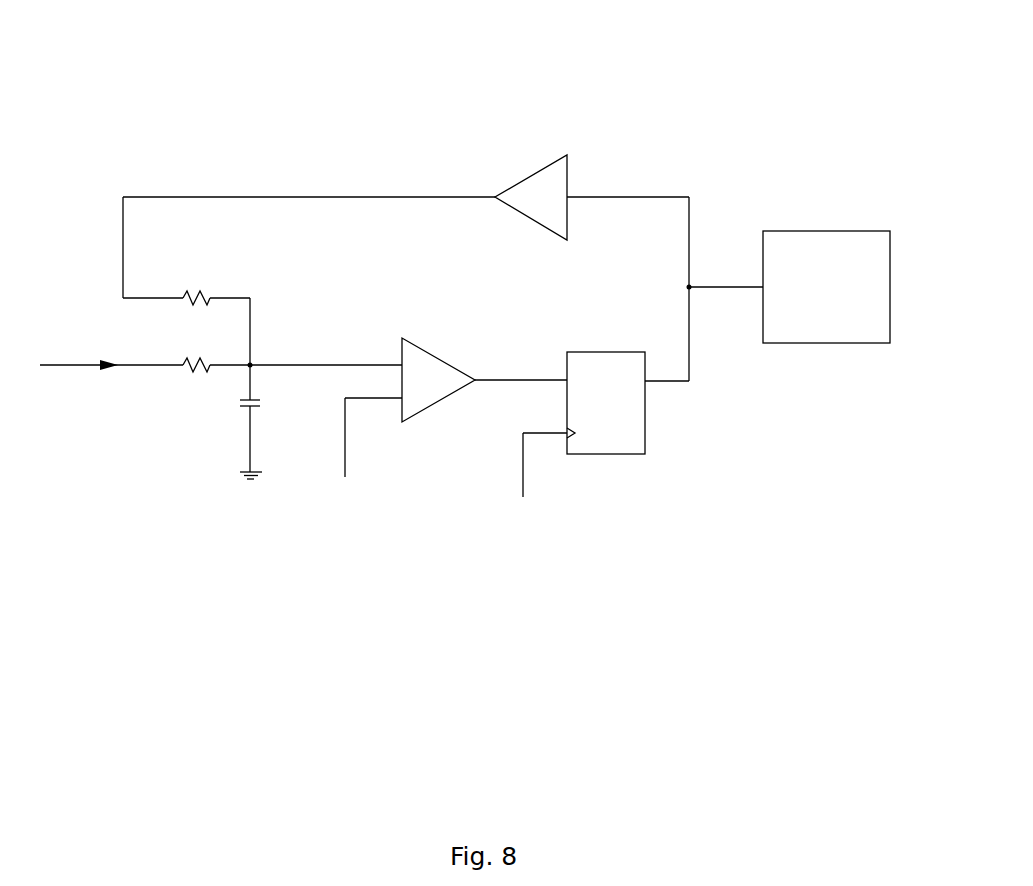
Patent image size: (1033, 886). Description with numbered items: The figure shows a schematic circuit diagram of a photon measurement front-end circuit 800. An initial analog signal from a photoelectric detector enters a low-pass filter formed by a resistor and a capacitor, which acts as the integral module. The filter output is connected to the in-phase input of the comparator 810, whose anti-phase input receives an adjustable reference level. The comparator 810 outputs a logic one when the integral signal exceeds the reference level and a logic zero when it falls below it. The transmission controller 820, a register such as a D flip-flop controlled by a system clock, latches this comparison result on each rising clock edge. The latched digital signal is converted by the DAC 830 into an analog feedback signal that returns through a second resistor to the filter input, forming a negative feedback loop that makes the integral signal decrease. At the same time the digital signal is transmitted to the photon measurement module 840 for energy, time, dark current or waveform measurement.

The photon measurement front-end circuit 800 is at (666, 50).
The comparator 810 is at (425, 349).
The transmission controller 820 is at (577, 352).
The DAC 830 is at (547, 163).
The photon measurement module 840 is at (820, 231).